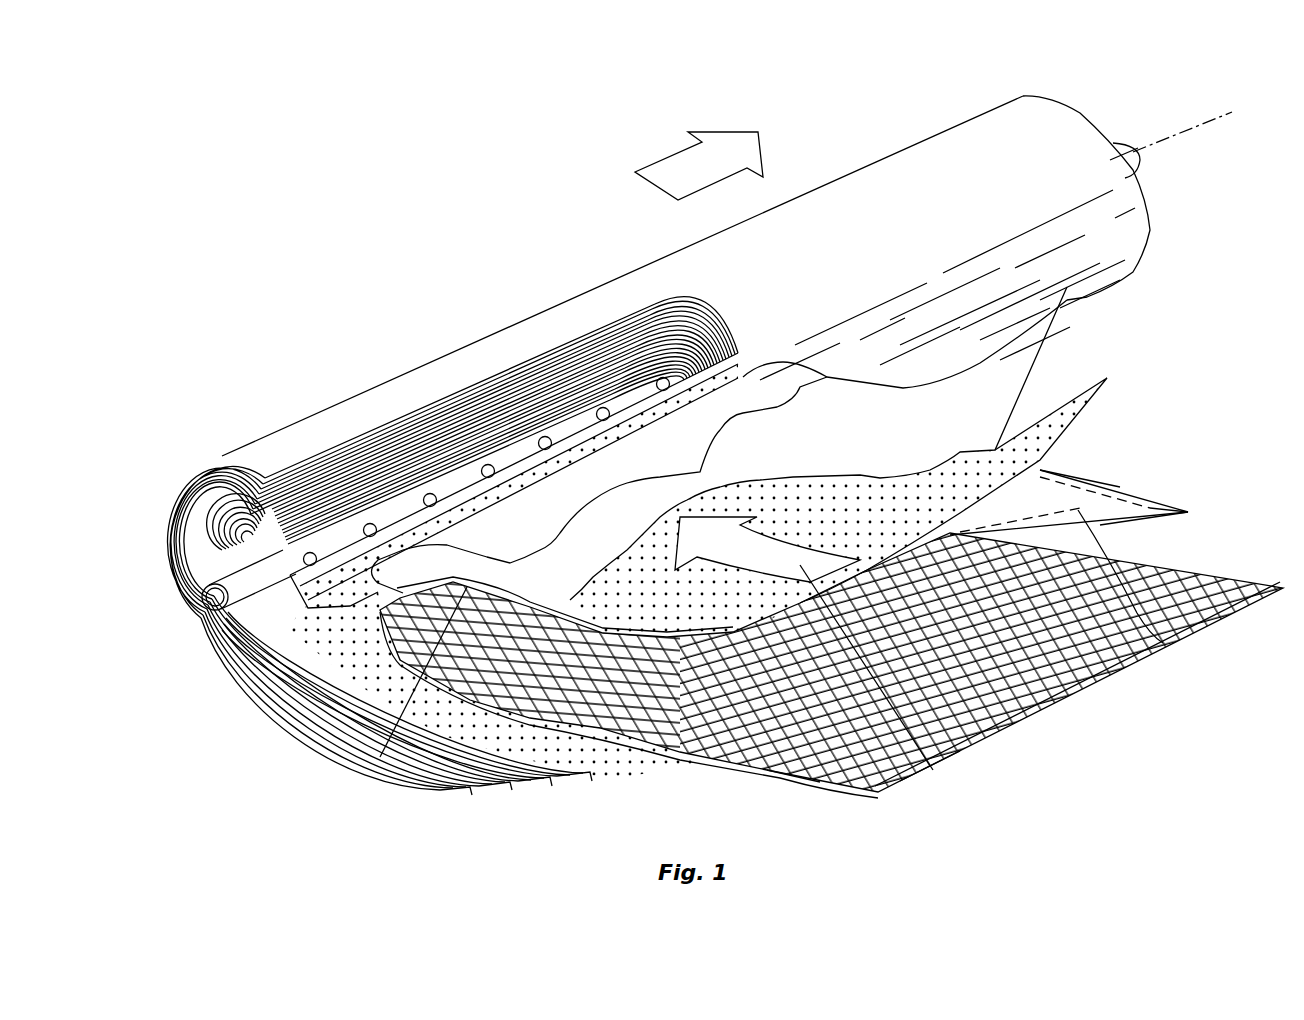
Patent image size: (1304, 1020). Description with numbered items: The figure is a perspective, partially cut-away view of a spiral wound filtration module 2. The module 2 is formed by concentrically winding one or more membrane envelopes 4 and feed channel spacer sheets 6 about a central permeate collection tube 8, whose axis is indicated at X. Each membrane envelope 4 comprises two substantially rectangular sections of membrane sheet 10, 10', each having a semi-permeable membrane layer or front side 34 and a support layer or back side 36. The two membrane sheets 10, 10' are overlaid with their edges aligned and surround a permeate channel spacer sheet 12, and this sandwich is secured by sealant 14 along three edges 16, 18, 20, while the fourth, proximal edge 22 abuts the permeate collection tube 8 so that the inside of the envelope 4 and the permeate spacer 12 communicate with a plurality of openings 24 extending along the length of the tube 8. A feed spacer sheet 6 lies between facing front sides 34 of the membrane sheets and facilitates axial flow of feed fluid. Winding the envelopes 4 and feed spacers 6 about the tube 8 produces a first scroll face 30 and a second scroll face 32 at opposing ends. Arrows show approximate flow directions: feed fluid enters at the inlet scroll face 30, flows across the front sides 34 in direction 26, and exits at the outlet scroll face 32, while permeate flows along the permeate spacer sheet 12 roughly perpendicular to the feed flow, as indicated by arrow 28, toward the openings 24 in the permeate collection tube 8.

The spiral wound filtration module 2 is at (550, 292).
The membrane envelope 4 is at (1190, 352).
The feed channel spacer sheet 6 is at (1015, 718).
The permeate collection tube 8 is at (210, 505).
The membrane sheet 10 is at (996, 596).
The membrane sheet 10' is at (785, 443).
The permeate channel spacer sheet 12 is at (1100, 395).
The sealant 14 is at (1163, 643).
The edge 16 is at (380, 757).
The edge 18 is at (1160, 498).
The edge 20 is at (1147, 517).
The proximal edge 22 is at (392, 540).
The openings 24 is at (426, 494).
The flow direction 26 is at (657, 160).
The flow direction 28 is at (930, 768).
The first scroll face 30 is at (242, 576).
The second scroll face 32 is at (1113, 140).
The front side 34 is at (812, 790).
The back side 36 is at (1227, 627).
The axis X is at (1213, 125).